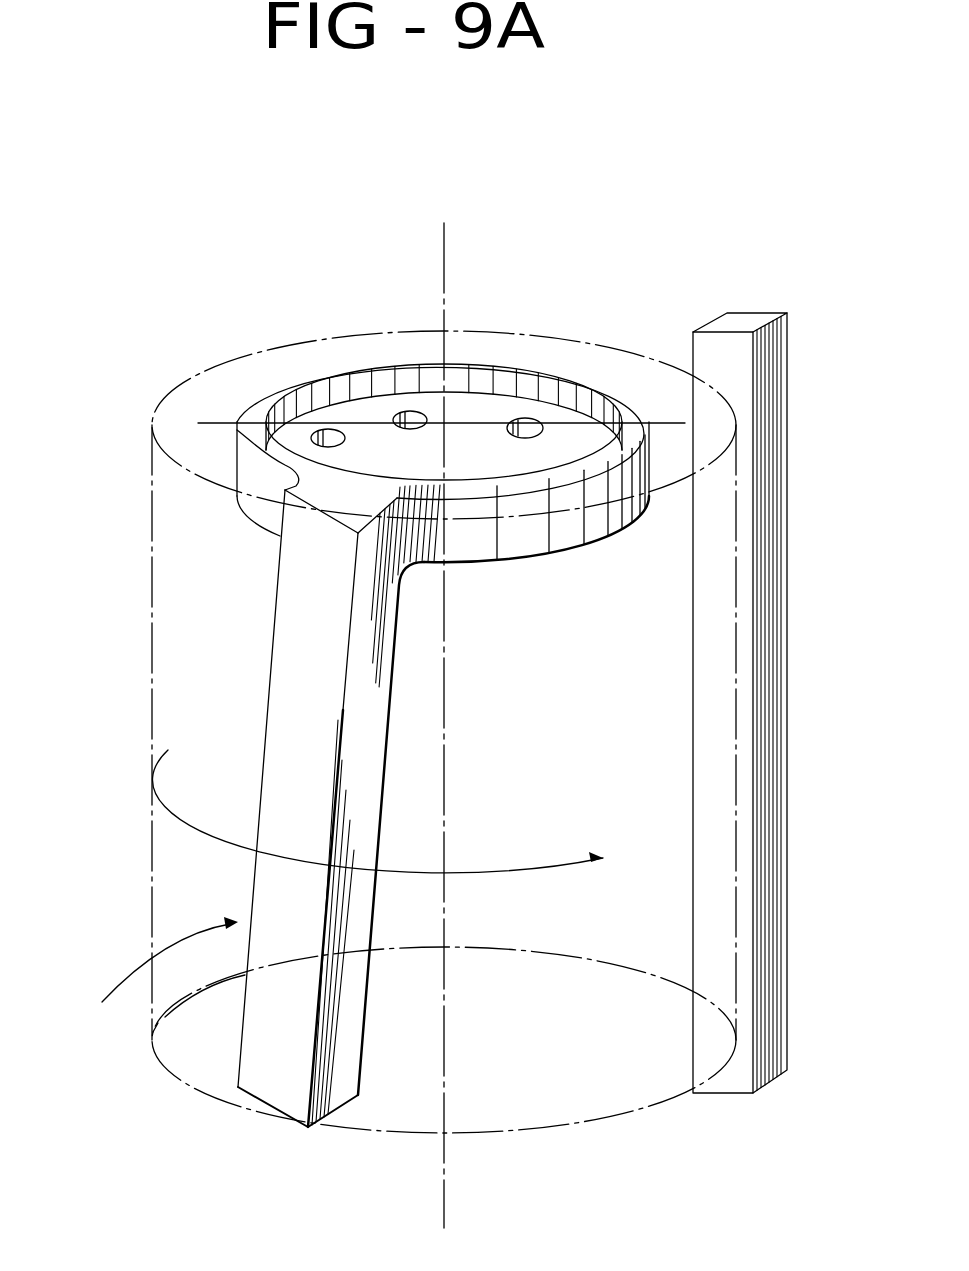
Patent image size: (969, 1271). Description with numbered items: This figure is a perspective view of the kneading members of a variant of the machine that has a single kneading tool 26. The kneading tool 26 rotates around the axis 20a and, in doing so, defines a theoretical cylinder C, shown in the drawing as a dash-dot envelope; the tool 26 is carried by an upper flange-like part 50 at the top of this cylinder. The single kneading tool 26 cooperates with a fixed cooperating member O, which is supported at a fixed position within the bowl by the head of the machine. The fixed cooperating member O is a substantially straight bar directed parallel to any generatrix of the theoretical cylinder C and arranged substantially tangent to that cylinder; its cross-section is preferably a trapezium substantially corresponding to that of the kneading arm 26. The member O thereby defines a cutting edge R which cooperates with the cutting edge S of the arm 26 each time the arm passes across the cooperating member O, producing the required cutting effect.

The flange ring 50 is at (617, 395).
The axis 20a is at (444, 666).
The cutting edge S is at (360, 711).
The cutting edge R is at (684, 658).
The fixed cooperating member O is at (775, 587).
The theoretical cylinder C is at (150, 670).
The kneading tool 26 is at (160, 978).